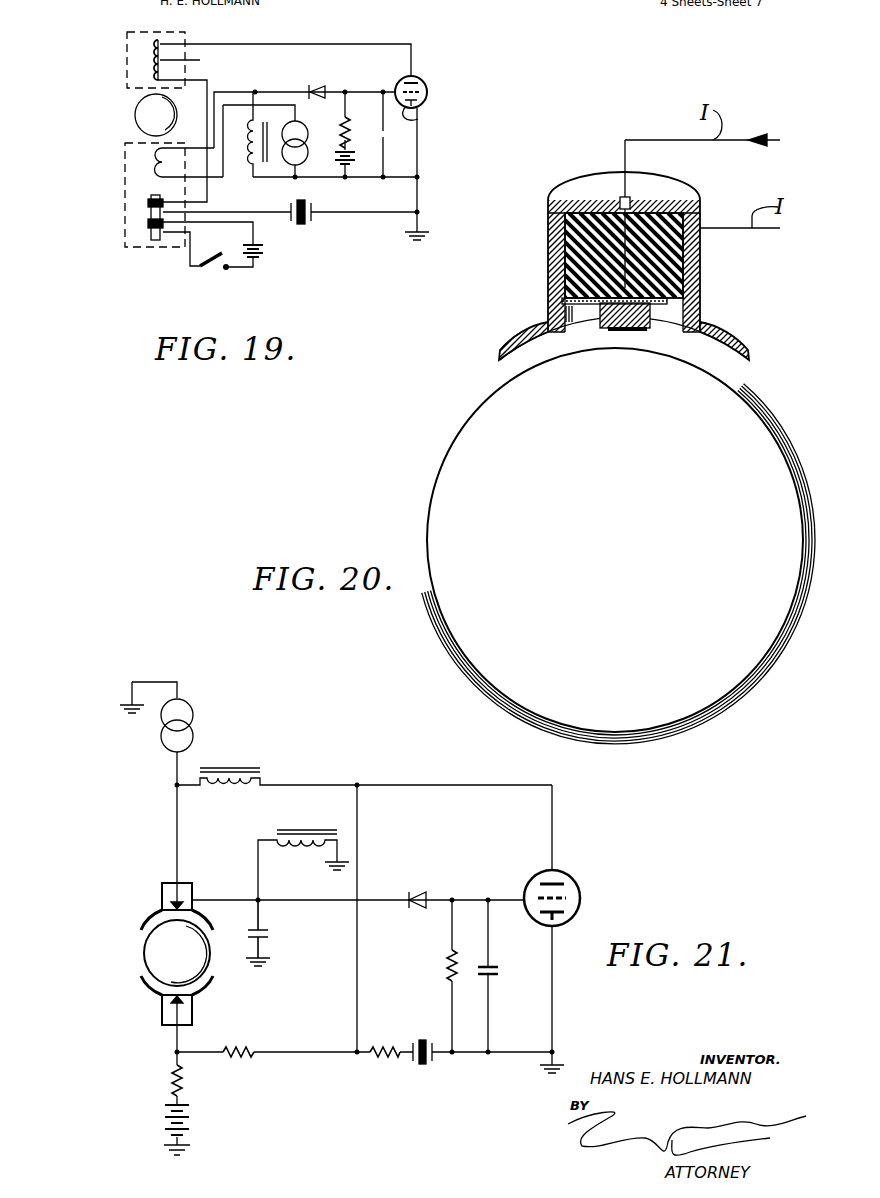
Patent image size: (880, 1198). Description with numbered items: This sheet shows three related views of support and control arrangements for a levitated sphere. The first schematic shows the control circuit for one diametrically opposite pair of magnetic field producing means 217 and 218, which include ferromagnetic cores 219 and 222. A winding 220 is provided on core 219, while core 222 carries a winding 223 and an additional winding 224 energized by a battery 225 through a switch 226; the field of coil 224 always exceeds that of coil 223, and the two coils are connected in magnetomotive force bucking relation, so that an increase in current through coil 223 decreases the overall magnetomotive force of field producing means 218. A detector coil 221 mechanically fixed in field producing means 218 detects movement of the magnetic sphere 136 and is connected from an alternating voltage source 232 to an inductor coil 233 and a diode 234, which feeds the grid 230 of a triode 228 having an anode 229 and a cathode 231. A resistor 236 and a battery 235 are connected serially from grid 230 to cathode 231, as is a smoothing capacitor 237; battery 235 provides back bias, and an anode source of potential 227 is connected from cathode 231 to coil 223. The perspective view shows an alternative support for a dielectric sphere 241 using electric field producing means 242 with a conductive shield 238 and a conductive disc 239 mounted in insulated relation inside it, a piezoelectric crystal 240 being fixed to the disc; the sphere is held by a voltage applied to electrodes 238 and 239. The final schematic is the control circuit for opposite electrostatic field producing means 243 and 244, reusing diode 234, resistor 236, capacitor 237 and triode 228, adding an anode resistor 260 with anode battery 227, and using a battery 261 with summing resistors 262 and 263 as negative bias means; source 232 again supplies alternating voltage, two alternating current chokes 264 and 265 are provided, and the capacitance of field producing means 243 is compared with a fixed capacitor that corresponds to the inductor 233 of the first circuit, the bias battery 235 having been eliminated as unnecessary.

In FIG. 19, the magnetic sphere 136 is at (137, 110).
In FIG. 19, the magnetic field producing means 217 is at (124, 78).
In FIG. 19, the magnetic field producing means 218 is at (124, 212).
In FIG. 19, the ferromagnetic core 219 is at (160, 41).
In FIG. 19, the winding 220 is at (201, 59).
In FIG. 19, the detector coil 221 is at (150, 161).
In FIG. 19, the ferromagnetic core 222 is at (156, 243).
In FIG. 19, the winding 223 is at (149, 202).
In FIG. 19, the additional winding 224 is at (149, 227).
In FIG. 19, the battery 225 is at (264, 250).
In FIG. 19, the switch 226 is at (210, 272).
In FIG. 19, the anode source of potential 227 is at (304, 225).
In FIG. 21, the anode source of potential 227 is at (421, 1068).
In FIG. 19, the triode 228 is at (431, 100).
In FIG. 21, the triode 228 is at (575, 871).
In FIG. 19, the anode 229 is at (413, 80).
In FIG. 19, the grid 230 is at (426, 88).
In FIG. 19, the cathode 231 is at (421, 130).
In FIG. 19, the alternating voltage source 232 is at (292, 165).
In FIG. 21, the alternating voltage source 232 is at (194, 726).
In FIG. 19, the inductor coil 233 is at (270, 118).
In FIG. 21, the inductor coil 233 is at (268, 934).
In FIG. 19, the diode 234 is at (324, 86).
In FIG. 21, the diode 234 is at (420, 890).
In FIG. 19, the battery 235 is at (357, 160).
In FIG. 19, the resistor 236 is at (342, 140).
In FIG. 21, the resistor 236 is at (445, 975).
In FIG. 21, the smoothing capacitor 237 is at (500, 972).
In FIG. 20, the conductive shield 238 is at (702, 273).
In FIG. 20, the conductive disc 239 is at (566, 303).
In FIG. 20, the piezoelectric crystal 240 is at (617, 333).
In FIG. 20, the dielectric sphere 241 is at (618, 546).
In FIG. 21, the dielectric sphere 241 is at (154, 952).
In FIG. 20, the electric field producing means 242 is at (711, 201).
In FIG. 21, the electrostatic field producing means 243 is at (160, 897).
In FIG. 21, the electrostatic field producing means 244 is at (160, 1012).
In FIG. 21, the anode resistor 260 is at (398, 1060).
In FIG. 21, the battery 261 is at (160, 1127).
In FIG. 21, the summing resistor 262 is at (242, 1058).
In FIG. 21, the summing resistor 263 is at (171, 1080).
In FIG. 21, the alternating current choke 264 is at (233, 791).
In FIG. 21, the alternating current choke 265 is at (300, 853).